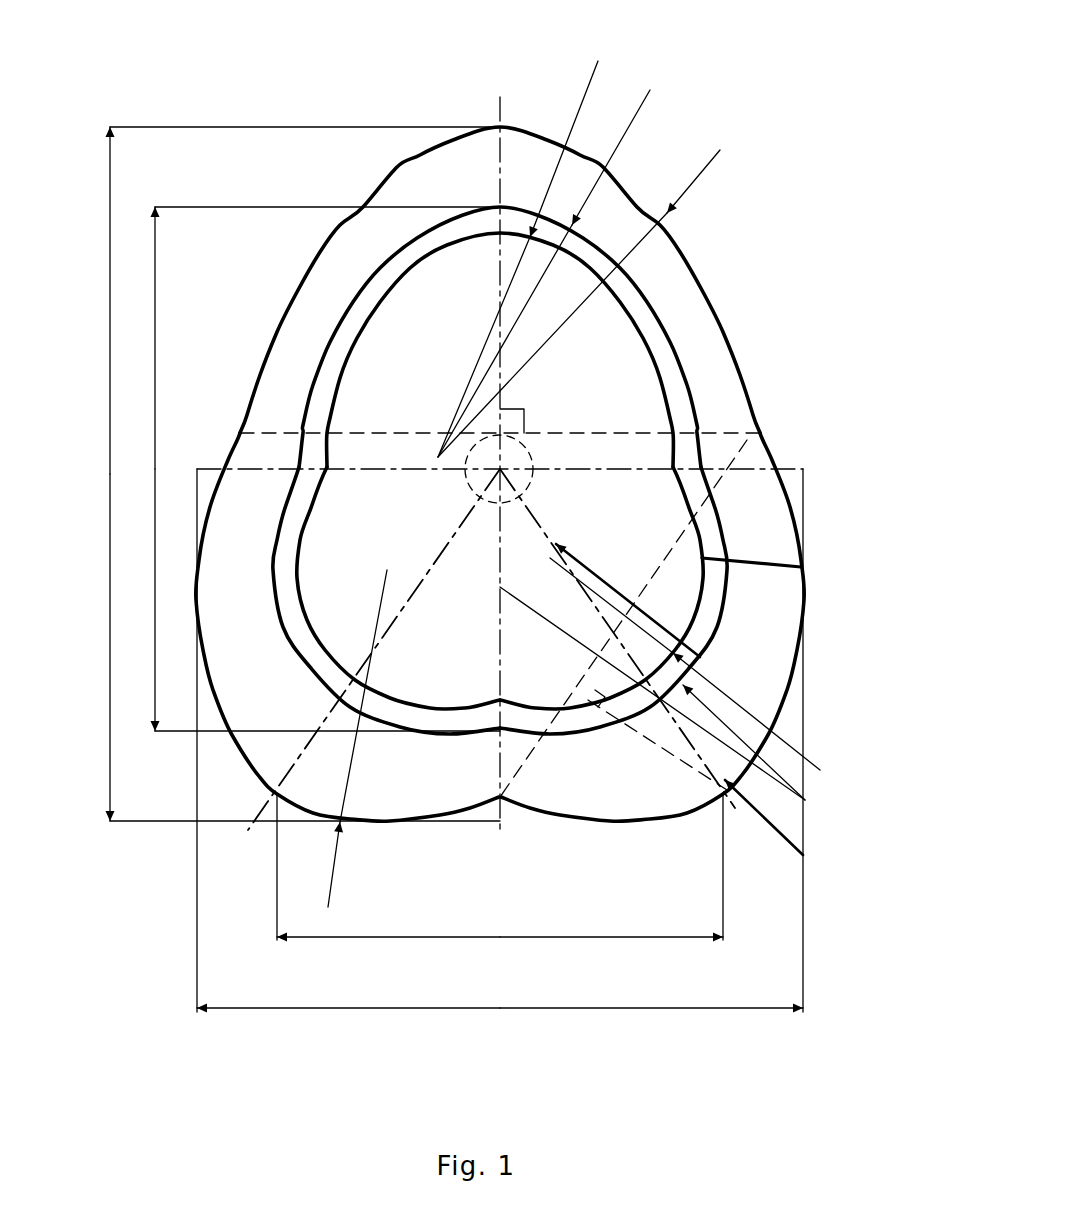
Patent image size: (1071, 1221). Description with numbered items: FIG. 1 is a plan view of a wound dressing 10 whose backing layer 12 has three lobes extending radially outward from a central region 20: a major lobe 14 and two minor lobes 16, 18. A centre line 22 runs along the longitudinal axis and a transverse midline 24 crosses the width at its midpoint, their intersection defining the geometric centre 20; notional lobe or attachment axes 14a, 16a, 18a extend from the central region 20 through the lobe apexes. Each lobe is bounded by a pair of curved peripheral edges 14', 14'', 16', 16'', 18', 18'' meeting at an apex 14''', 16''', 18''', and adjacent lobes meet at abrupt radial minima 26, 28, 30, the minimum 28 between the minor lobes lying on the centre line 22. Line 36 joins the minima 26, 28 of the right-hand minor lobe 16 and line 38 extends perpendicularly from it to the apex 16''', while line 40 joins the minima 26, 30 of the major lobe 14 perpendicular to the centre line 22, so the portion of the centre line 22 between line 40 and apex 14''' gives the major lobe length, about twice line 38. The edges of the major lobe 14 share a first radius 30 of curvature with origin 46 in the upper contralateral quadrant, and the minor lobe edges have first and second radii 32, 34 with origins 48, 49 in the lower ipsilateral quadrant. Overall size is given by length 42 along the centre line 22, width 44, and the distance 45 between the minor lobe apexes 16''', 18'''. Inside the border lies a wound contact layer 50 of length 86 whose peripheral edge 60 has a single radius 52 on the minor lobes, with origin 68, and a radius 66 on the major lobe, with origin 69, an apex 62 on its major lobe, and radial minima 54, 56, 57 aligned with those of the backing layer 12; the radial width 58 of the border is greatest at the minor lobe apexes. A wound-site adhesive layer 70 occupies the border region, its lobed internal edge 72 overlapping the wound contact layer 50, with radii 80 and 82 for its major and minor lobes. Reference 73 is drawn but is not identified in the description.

The wound dressing 10 is at (838, 195).
The backing layer 12 is at (721, 366).
The major lobe 14 is at (564, 283).
The first curved peripheral edge 14' is at (753, 295).
The second curved peripheral edge 14'' is at (185, 295).
The apex 14''' is at (526, 93).
The lobe axis 14a is at (498, 163).
The minor lobe 16 is at (720, 630).
The curved peripheral edge 16' is at (610, 840).
The lateral curved peripheral edge 16'' is at (794, 500).
The apex 16''' is at (692, 827).
The lobe axis 16a is at (752, 832).
The minor lobe 18 is at (279, 661).
The curved peripheral edge 18' is at (396, 847).
The lateral curved peripheral edge 18'' is at (161, 500).
The apex 18''' is at (266, 842).
The lobe axis 18a is at (250, 835).
The central region 20 is at (440, 455).
The centre line 22 is at (502, 800).
The transverse midline 24 is at (355, 470).
The radial minimum 26 is at (760, 433).
The radial minimum 28 is at (497, 798).
The first radius of curvature 30 is at (720, 150).
The first radius of curvature 32 is at (752, 832).
The second radius of curvature 34 is at (328, 890).
The line 36 is at (653, 577).
The line 38 is at (647, 740).
The line 40 is at (590, 433).
The length 42 is at (110, 700).
The width 44 is at (402, 1010).
The distance 45 is at (527, 940).
The origin 46 is at (433, 430).
The origin 48 is at (500, 587).
The origin 49 is at (390, 567).
The wound contact layer 50 is at (500, 535).
The radius 52 is at (808, 800).
The radial minimum 54 is at (707, 450).
The radial minimum 56 is at (499, 733).
The radial minimum 57 is at (297, 468).
The radial width 58 is at (801, 567).
The peripheral edge 60 is at (713, 635).
The apex 62 is at (499, 207).
The first radius of curvature 66 is at (650, 90).
The origin 68 is at (556, 544).
The origin 69 is at (433, 453).
The wound-site adhesive layer 70 is at (641, 336).
The internal edge 72 is at (682, 268).
The transition point 73 is at (698, 483).
The radius 80 is at (598, 61).
The radius 82 is at (820, 770).
The length 86 is at (153, 581).